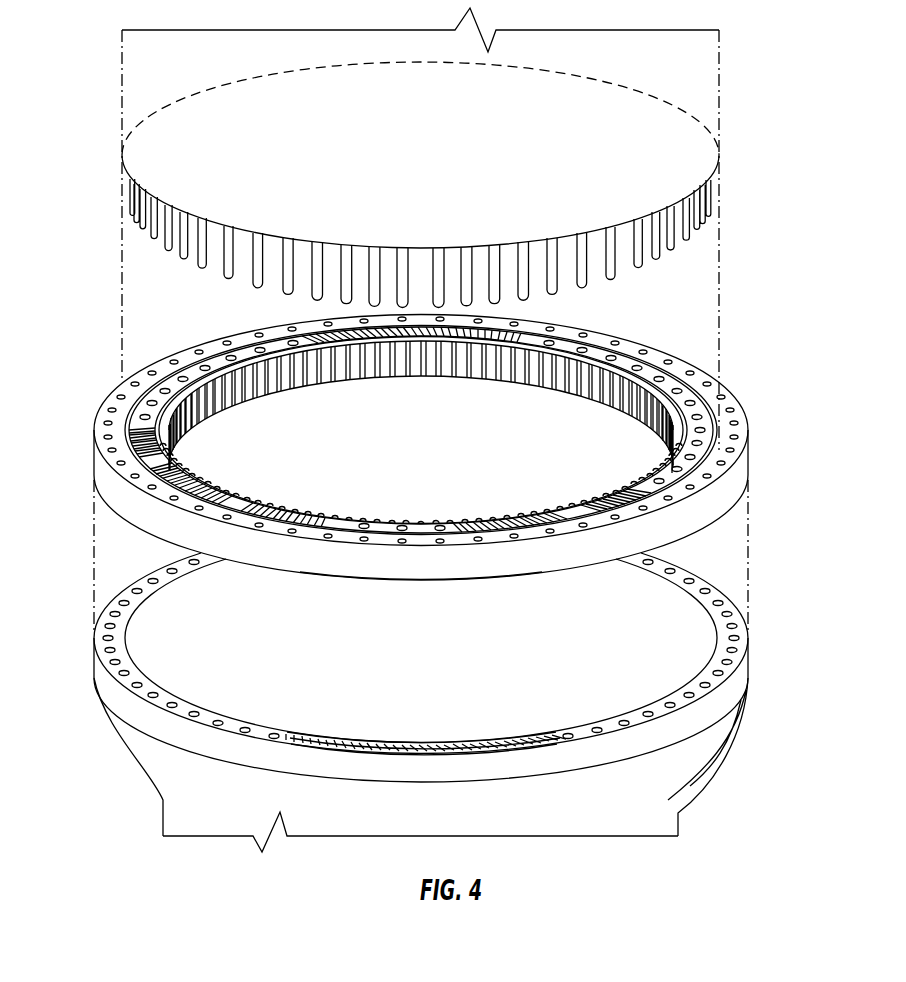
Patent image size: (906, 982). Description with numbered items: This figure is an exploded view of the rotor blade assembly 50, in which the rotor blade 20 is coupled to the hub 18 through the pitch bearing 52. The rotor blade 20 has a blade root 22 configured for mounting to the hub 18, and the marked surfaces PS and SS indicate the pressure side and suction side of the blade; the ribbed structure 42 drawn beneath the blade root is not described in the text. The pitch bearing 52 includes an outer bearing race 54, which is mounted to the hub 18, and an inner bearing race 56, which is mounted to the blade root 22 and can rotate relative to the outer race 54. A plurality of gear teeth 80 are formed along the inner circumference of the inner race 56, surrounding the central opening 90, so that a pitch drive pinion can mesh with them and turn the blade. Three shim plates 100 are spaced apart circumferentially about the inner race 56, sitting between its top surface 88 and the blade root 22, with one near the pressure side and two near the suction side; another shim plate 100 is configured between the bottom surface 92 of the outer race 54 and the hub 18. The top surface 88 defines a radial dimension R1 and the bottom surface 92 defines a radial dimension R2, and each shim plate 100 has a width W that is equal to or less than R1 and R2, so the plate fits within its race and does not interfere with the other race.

The hub 18 is at (97, 704).
The rotor blade 20 is at (729, 71).
The blade root 22 is at (703, 120).
The cooling fins 42 is at (613, 280).
The rotor blade assembly 50 is at (100, 160).
The pitch bearing 52 is at (736, 395).
The outer bearing race 54 is at (736, 488).
The inner bearing race 56 is at (210, 398).
The gear teeth 80 is at (236, 366).
The top surface 88 is at (175, 382).
The central opening 90 is at (434, 450).
The bottom surface 92 is at (481, 579).
The shim plate 100 is at (286, 330).
The radial dimension R1 is at (156, 385).
The radial dimension R2 is at (138, 364).
The pressure side surface PS is at (420, 48).
The suction side surface SS is at (420, 232).
The width W is at (537, 510).